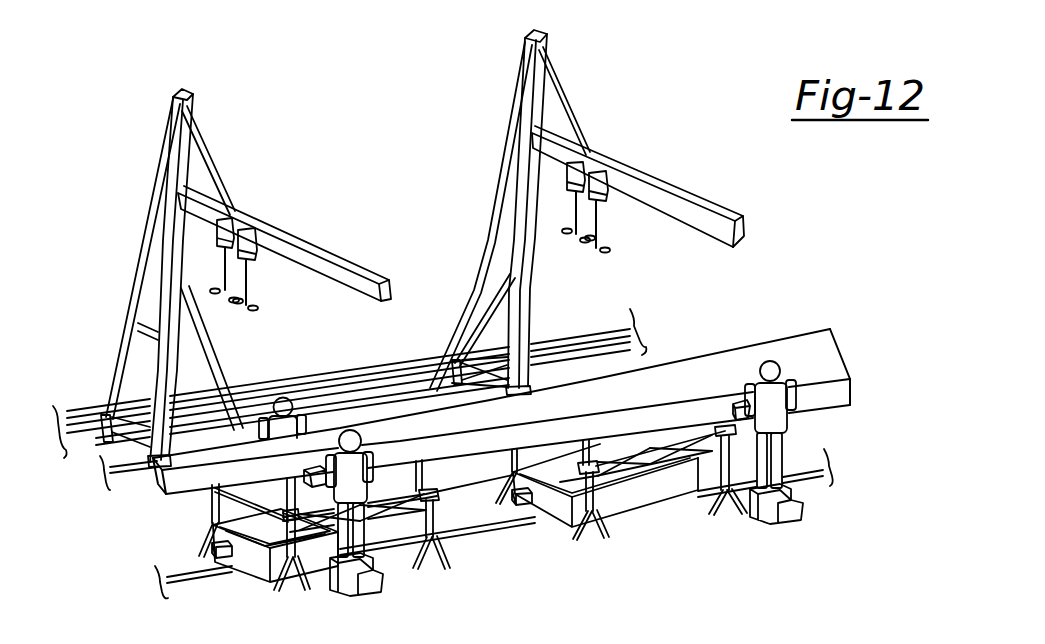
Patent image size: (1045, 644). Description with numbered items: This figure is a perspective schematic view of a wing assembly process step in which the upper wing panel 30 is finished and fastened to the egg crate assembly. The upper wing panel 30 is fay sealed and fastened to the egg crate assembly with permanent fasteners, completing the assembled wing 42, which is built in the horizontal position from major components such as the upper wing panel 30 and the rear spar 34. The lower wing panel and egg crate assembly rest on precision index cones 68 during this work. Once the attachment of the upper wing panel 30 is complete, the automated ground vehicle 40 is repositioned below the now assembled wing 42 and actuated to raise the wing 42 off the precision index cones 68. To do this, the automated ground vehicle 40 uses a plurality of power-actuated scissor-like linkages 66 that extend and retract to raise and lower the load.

The upper wing panel 30 is at (538, 373).
The wing 42 is at (795, 347).
The rear spar 34 is at (830, 397).
The automated ground vehicle 40 is at (625, 507).
The scissor-like linkages 66 is at (662, 463).
The precision index cones 68 is at (597, 533).